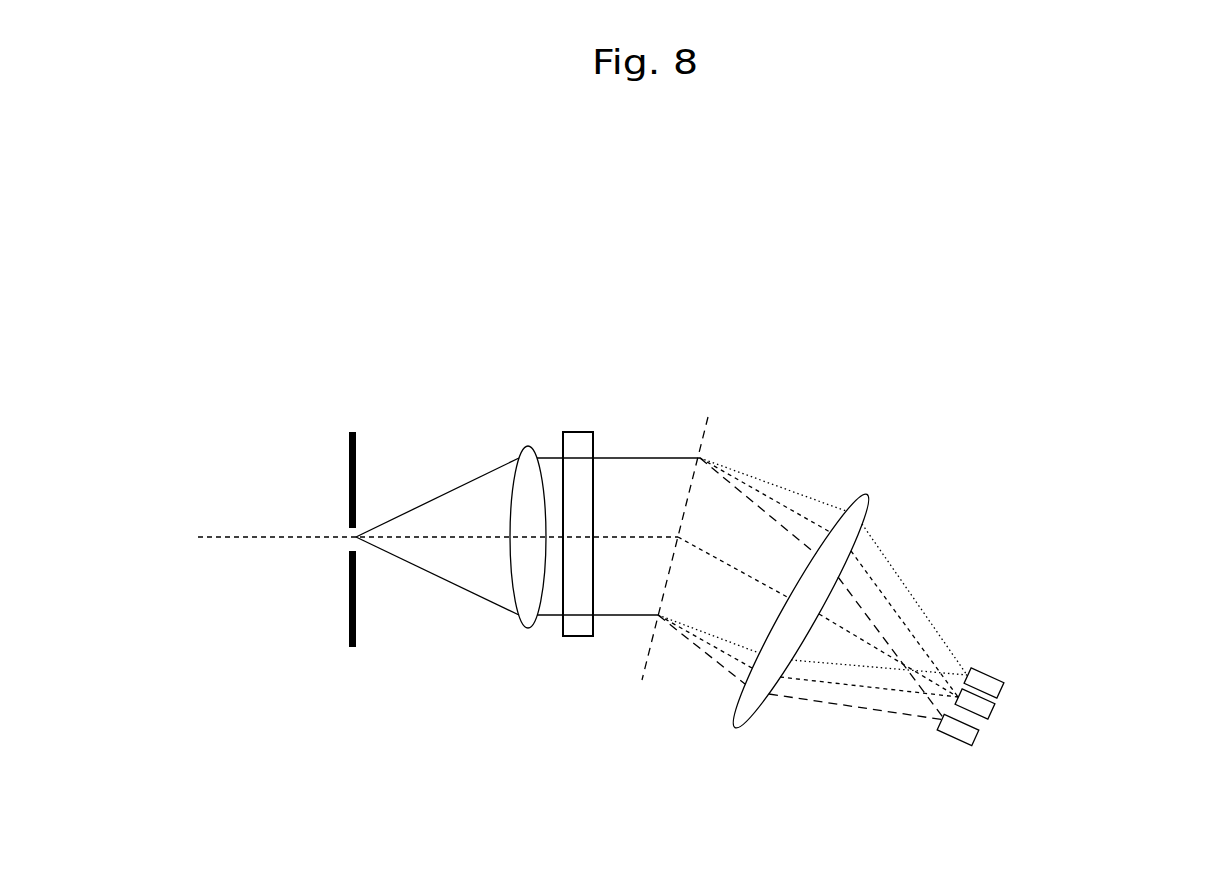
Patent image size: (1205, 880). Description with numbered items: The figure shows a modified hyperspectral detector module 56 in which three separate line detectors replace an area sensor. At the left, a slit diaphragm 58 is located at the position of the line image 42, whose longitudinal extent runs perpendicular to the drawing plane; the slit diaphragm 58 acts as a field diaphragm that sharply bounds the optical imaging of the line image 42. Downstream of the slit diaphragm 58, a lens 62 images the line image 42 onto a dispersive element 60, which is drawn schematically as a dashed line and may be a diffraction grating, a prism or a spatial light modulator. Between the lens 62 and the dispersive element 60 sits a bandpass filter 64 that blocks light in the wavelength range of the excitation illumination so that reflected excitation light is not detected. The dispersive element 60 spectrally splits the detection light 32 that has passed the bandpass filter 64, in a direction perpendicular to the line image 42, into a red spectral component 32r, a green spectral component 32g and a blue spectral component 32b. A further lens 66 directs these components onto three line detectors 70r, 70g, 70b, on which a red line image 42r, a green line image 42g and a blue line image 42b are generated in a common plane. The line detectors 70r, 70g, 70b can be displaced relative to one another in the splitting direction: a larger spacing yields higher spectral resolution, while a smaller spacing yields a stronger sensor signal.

The detector module 56 is at (1067, 232).
The line image 42 is at (350, 542).
The slit diaphragm 58 is at (358, 630).
The detection light 32 is at (477, 481).
The lens 62 is at (526, 446).
The bandpass filter 64 is at (578, 637).
The dispersive element 60 is at (698, 448).
The further lens 66 is at (737, 729).
The red spectral component 32r is at (885, 540).
The green spectral component 32g is at (875, 577).
The blue spectral component 32b is at (868, 620).
The red line image 42r is at (971, 669).
The green line image 42g is at (958, 698).
The blue line image 42b is at (945, 731).
The line detector 70r is at (1003, 682).
The line detector 70g is at (995, 716).
The line detector 70b is at (975, 750).